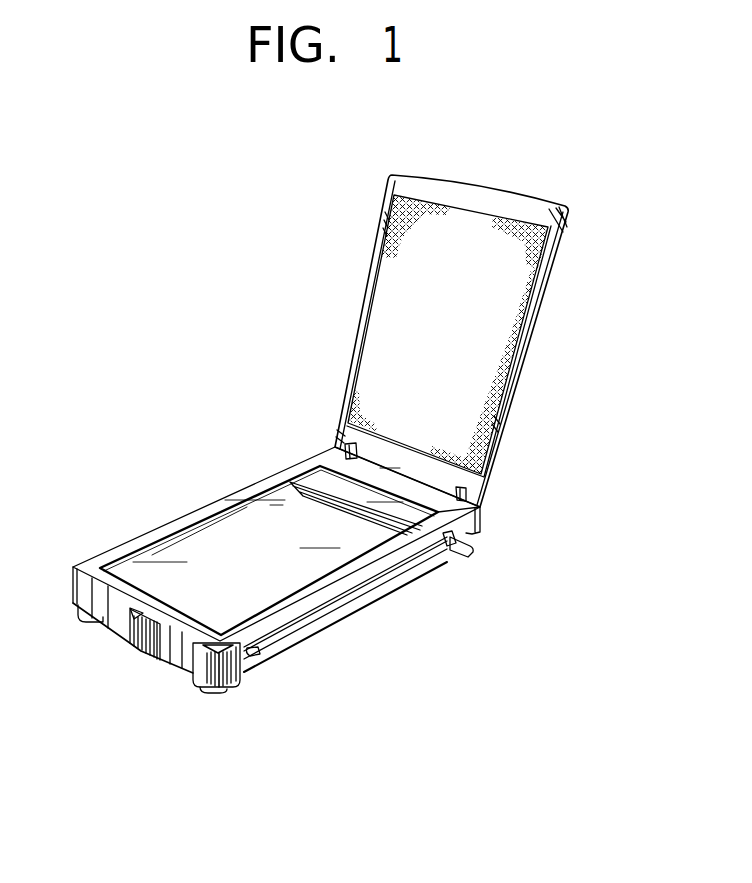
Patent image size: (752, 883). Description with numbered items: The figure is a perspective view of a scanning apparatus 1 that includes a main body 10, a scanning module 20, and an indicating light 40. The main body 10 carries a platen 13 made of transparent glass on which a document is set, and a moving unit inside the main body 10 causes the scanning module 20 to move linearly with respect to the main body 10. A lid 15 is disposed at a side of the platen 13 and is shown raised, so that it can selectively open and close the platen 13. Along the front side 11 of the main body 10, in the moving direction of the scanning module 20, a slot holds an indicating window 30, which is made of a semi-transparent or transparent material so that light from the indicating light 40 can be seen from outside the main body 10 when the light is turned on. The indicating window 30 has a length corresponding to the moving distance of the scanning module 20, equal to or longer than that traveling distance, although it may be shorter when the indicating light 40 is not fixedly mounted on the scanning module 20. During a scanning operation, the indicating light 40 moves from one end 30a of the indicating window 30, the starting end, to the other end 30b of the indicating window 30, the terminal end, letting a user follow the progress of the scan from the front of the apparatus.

The scanning apparatus 1 is at (137, 318).
The main body 10 is at (91, 549).
The front side 11 is at (245, 668).
The platen 13 is at (223, 536).
The lid 15 is at (545, 265).
The scanning module 20 is at (314, 475).
The indicating window 30 is at (412, 573).
The end of the indicating window 30a is at (458, 548).
The other end of the indicating window 30b is at (253, 660).
The indicating light 40 is at (449, 540).